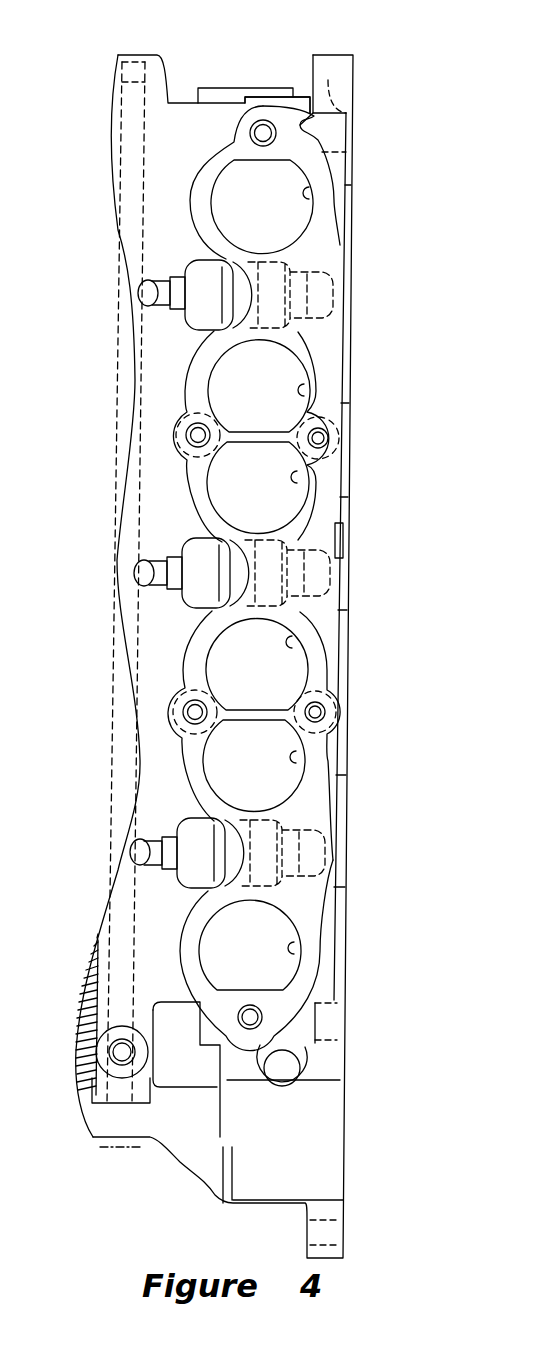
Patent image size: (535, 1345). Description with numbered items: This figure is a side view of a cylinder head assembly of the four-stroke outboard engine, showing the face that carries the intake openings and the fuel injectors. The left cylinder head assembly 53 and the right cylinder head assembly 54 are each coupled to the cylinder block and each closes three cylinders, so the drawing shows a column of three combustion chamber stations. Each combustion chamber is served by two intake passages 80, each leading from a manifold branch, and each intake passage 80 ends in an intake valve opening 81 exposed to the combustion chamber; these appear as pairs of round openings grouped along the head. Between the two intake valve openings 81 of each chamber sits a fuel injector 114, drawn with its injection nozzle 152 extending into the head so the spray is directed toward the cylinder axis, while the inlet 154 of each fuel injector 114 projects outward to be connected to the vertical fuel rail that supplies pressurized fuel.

The left cylinder head assembly 53 is at (250, 70).
The right cylinder head assembly 54 is at (277, 105).
The intake passage 80 is at (287, 213).
The intake valve opening 81 is at (310, 193).
The fuel injector 114 is at (176, 338).
The injection nozzle 152 is at (353, 298).
The inlet 154 is at (143, 295).